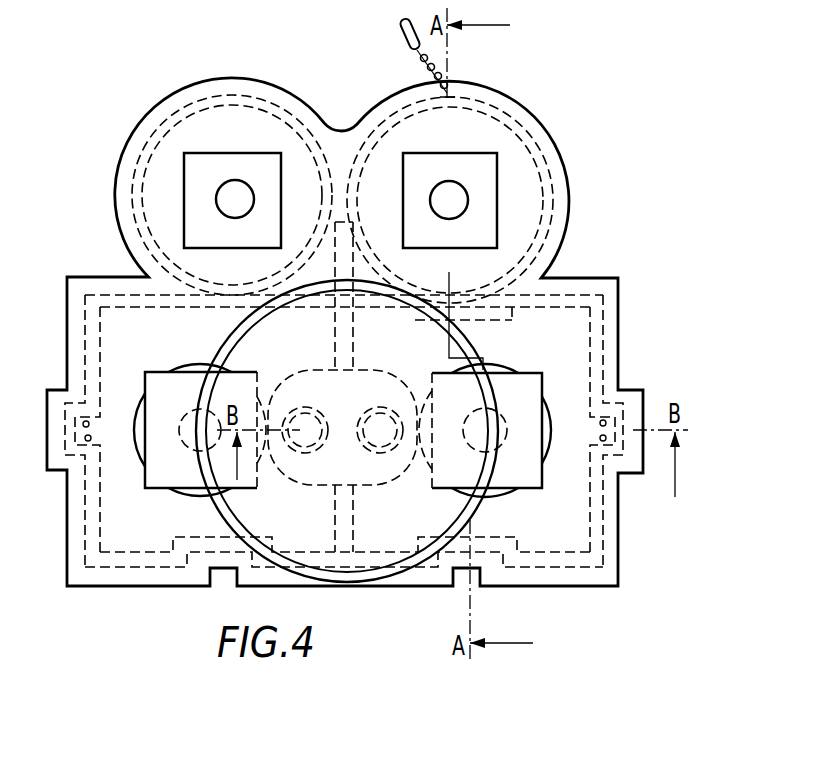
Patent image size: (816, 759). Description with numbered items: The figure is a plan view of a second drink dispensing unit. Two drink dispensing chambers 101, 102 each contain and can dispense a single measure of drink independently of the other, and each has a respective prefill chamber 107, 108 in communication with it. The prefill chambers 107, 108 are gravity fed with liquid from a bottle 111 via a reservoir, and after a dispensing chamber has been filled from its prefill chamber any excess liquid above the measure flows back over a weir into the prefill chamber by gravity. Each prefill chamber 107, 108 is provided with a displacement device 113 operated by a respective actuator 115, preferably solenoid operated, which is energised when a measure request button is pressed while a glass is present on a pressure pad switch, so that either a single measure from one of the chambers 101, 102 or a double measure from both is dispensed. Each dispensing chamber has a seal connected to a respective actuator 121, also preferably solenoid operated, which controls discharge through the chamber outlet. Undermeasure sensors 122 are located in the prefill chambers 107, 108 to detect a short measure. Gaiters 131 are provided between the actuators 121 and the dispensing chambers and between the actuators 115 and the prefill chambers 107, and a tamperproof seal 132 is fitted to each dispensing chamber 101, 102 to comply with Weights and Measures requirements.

The dispensing chamber 101 is at (530, 172).
The dispensing chamber 102 is at (150, 173).
The prefill chamber 107 is at (592, 348).
The prefill chamber 108 is at (94, 331).
The bottle 111 is at (226, 351).
The displacement device 113 is at (544, 512).
The actuator 115 is at (178, 468).
The actuator 121 is at (483, 216).
The undermeasure sensor 122 is at (600, 424).
The gaiter 131 is at (500, 366).
The tamperproof seal 132 is at (402, 32).